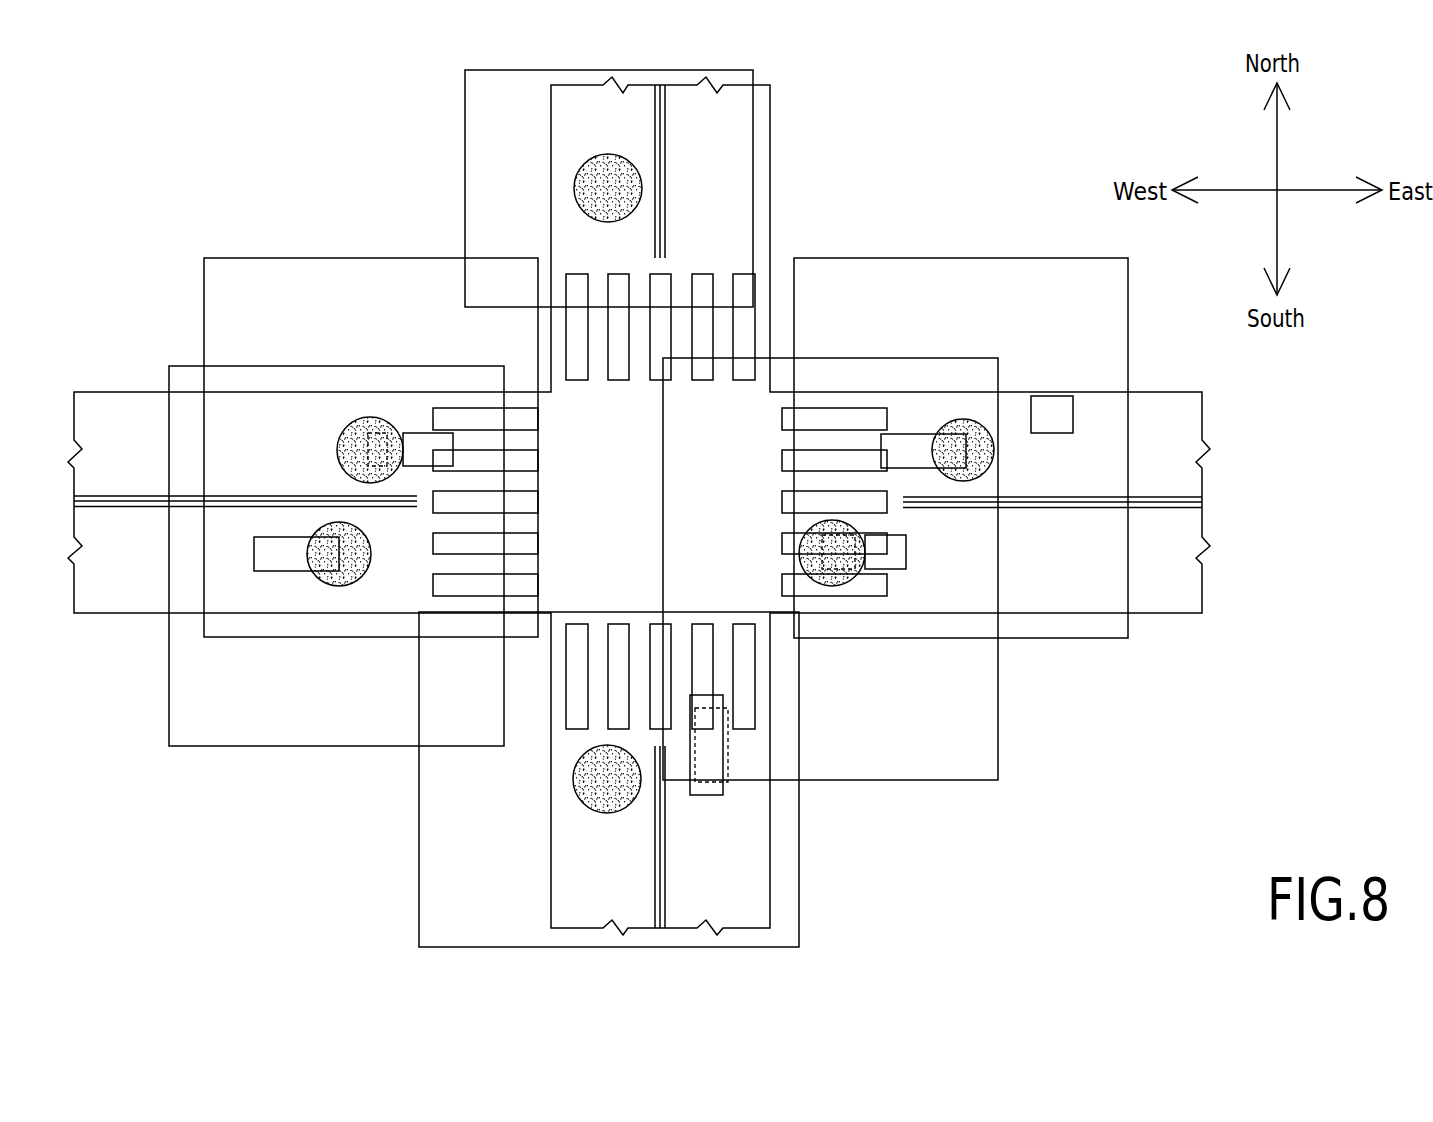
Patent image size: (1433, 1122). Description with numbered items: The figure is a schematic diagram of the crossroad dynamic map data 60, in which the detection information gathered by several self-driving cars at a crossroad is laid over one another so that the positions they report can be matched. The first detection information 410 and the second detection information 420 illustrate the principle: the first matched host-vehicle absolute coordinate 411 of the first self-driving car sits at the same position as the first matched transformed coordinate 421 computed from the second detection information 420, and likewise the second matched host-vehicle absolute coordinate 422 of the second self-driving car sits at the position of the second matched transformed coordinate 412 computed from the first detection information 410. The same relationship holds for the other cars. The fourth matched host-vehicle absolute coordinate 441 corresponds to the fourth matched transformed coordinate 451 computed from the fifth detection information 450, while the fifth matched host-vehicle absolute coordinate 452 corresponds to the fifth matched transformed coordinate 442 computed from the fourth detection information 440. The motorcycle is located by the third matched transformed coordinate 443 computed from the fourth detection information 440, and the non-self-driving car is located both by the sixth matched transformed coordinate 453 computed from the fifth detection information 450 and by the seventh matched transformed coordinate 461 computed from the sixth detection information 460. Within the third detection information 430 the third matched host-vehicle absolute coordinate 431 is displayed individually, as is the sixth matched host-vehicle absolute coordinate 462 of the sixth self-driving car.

The crossroad dynamic map data 60 is at (252, 130).
The first detection information 410 is at (268, 746).
The first matched host-vehicle absolute coordinate 411 is at (341, 580).
The second matched transformed coordinate 412 is at (418, 432).
The second detection information 420 is at (278, 258).
The first matched transformed coordinate 421 is at (277, 560).
The second matched host-vehicle absolute coordinate 422 is at (350, 450).
The third detection information 430 is at (465, 123).
The third matched host-vehicle absolute coordinate 431 is at (590, 182).
The fourth detection information 440 is at (985, 258).
The fourth matched host-vehicle absolute coordinate 441 is at (960, 440).
The fifth matched transformed coordinate 442 is at (897, 551).
The third matched transformed coordinate 443 is at (1050, 407).
The fifth detection information 450 is at (998, 705).
The fourth matched transformed coordinate 451 is at (910, 447).
The fifth matched host-vehicle absolute coordinate 452 is at (832, 573).
The sixth matched transformed coordinate 453 is at (707, 700).
The sixth detection information 460 is at (799, 893).
The seventh matched transformed coordinate 461 is at (711, 789).
The sixth matched host-vehicle absolute coordinate 462 is at (595, 788).